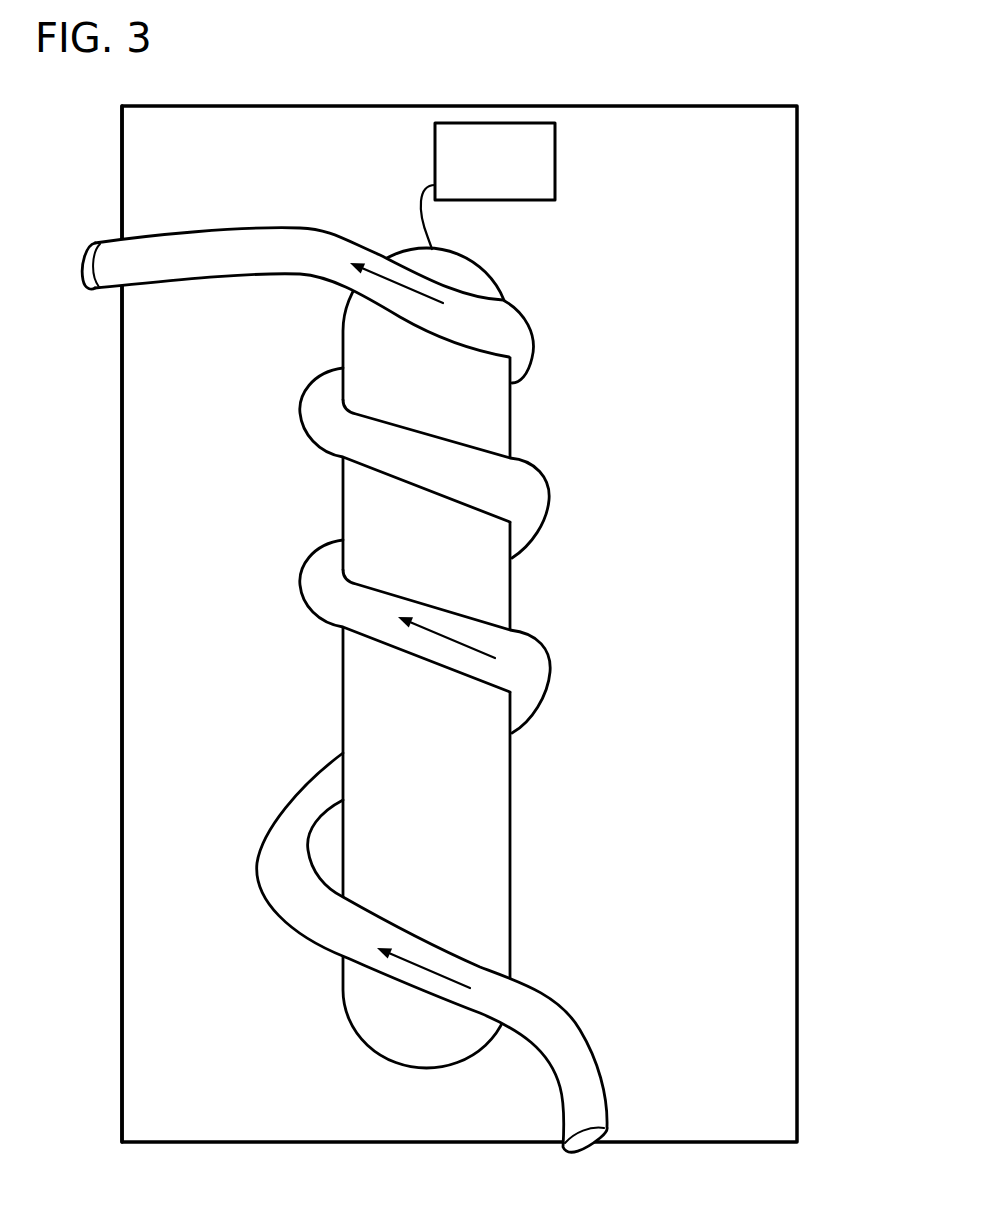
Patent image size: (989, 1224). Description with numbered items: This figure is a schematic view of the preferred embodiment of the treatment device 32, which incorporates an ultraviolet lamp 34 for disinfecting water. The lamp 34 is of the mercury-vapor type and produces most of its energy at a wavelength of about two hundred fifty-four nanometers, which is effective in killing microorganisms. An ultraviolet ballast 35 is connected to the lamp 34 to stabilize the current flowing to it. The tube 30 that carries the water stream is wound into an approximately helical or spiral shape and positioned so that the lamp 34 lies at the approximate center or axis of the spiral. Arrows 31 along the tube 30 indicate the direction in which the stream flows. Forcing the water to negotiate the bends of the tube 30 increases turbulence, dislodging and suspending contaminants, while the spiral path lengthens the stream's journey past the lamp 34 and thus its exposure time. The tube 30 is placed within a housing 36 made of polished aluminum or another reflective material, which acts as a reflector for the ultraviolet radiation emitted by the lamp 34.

The tube 30 is at (585, 1058).
The fluid flow direction 31 is at (465, 300).
The treatment device 32 is at (799, 731).
The ultraviolet lamp 34 is at (510, 842).
The ultraviolet ballast 35 is at (557, 150).
The housing 36 is at (123, 667).